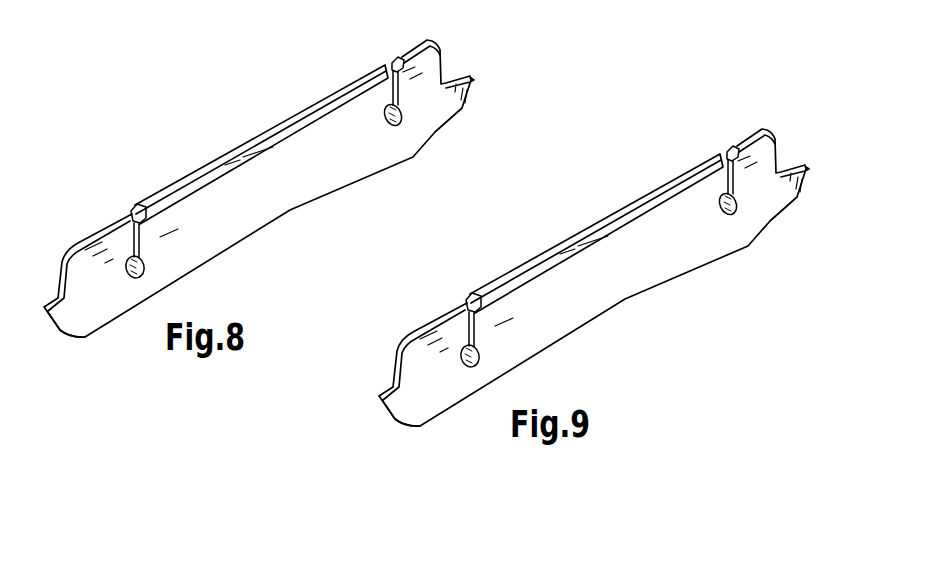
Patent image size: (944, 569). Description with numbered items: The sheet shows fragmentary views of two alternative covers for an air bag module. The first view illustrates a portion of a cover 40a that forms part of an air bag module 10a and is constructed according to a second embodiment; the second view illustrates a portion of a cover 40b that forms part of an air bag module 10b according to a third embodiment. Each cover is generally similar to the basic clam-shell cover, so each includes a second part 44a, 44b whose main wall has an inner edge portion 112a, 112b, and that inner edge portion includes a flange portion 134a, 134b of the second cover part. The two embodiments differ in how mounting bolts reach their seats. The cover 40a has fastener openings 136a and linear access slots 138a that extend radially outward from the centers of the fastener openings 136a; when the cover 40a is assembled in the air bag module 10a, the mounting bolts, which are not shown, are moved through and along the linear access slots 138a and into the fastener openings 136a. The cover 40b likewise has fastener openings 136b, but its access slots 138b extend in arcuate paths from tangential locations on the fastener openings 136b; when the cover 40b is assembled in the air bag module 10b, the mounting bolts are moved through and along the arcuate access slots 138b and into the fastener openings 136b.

In FIG. 8, the air bag module 10a is at (178, 92).
In FIG. 8, the cover 40a is at (118, 168).
In FIG. 8, the second part 44a is at (61, 343).
In FIG. 8, the inner edge portion 112a is at (288, 117).
In FIG. 8, the flange portion 134a is at (313, 103).
In FIG. 8, the fastener openings 136a is at (402, 120).
In FIG. 8, the access slots 138a is at (385, 77).
In FIG. 9, the air bag module 10b is at (699, 309).
In FIG. 9, the cover 40b is at (641, 320).
In FIG. 9, the second part 44b is at (395, 429).
In FIG. 9, the inner edge portion 112b is at (577, 230).
In FIG. 9, the flange portion 134b is at (633, 197).
In FIG. 9, the fastener openings 136b is at (482, 356).
In FIG. 9, the access slots 138b is at (721, 175).